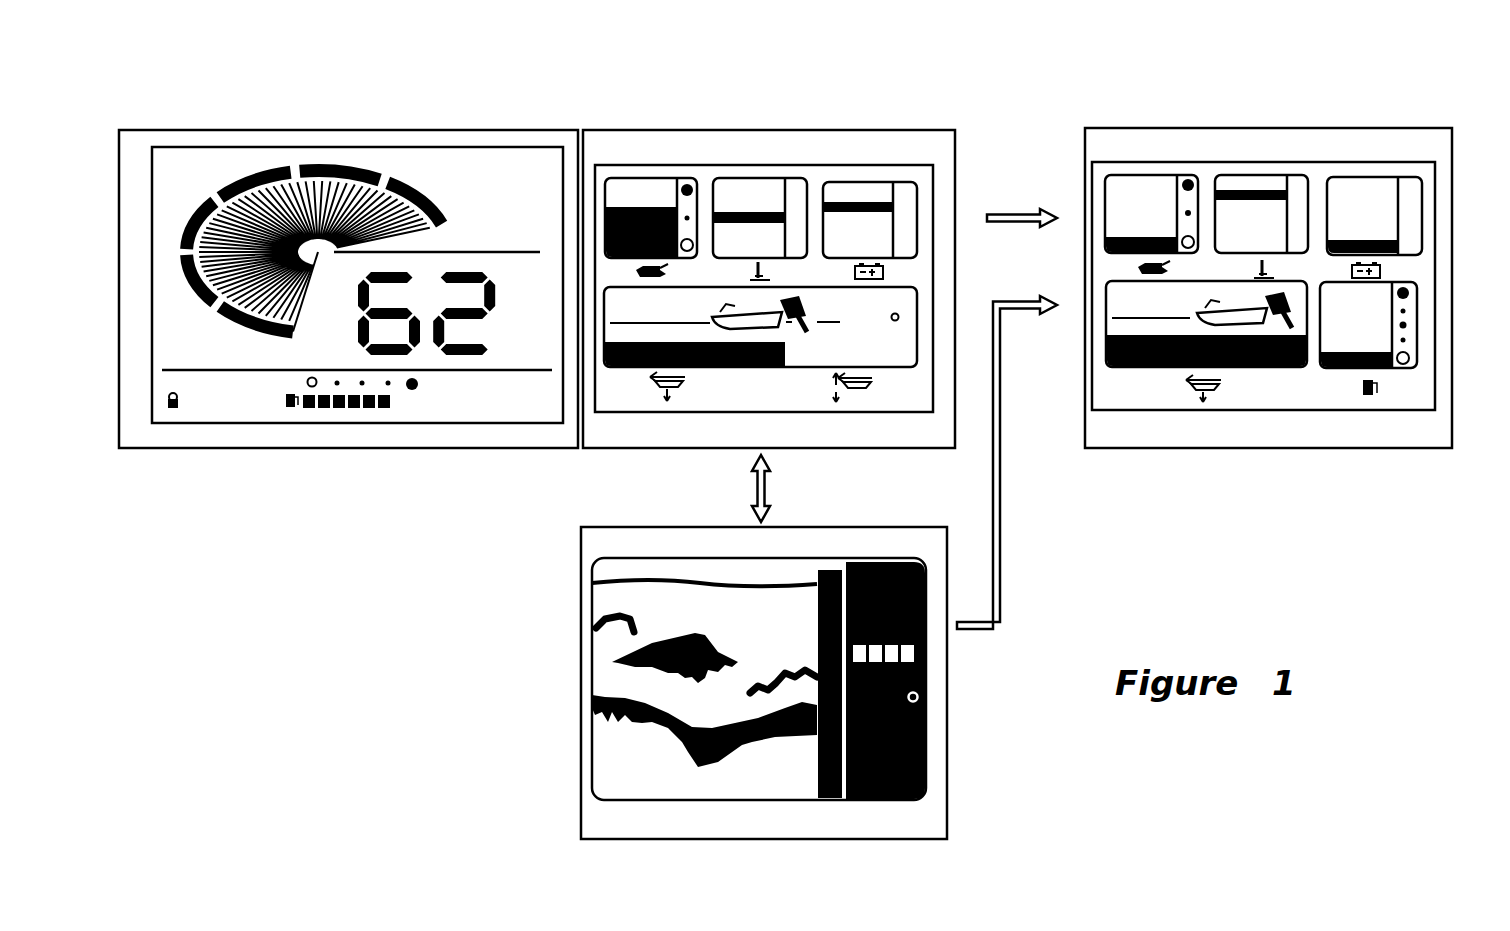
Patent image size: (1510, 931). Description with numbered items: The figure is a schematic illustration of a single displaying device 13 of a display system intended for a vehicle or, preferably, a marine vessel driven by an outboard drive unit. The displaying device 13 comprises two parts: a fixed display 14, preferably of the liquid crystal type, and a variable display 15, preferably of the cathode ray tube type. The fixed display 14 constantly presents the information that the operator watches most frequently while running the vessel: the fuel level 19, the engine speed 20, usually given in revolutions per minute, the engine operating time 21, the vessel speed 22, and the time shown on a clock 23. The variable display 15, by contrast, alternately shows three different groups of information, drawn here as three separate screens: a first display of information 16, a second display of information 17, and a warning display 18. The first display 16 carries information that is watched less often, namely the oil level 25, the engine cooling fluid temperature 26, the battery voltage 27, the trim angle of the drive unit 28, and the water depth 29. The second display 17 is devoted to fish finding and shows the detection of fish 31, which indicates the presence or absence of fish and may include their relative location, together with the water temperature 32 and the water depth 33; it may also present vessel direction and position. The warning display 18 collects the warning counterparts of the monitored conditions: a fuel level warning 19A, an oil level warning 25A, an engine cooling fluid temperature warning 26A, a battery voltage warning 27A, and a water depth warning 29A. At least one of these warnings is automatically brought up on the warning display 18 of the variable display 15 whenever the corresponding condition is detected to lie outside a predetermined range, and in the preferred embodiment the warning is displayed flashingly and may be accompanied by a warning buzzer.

The displaying device 13 is at (463, 130).
The fixed display 14 is at (351, 207).
The variable display 15 is at (695, 140).
The first display of information 16 is at (935, 200).
The second display of information 17 is at (728, 691).
The warning display 18 is at (1437, 213).
The fuel level 19 is at (406, 413).
The fuel level warning 19A is at (1340, 370).
The engine speed 20 is at (432, 179).
The engine operating time 21 is at (198, 418).
The vessel speed 22 is at (495, 281).
The clock 23 is at (514, 425).
The oil level 25 is at (650, 180).
The oil level warning 25A is at (1131, 175).
The engine cooling fluid temperature 26 is at (750, 178).
The engine cooling fluid temperature warning 26A is at (1258, 175).
The battery voltage 27 is at (850, 180).
The battery voltage warning 27A is at (1340, 177).
The trim angle of the drive unit 28 is at (857, 316).
The water depth 29 is at (698, 368).
The water depth warning 29A is at (1150, 368).
The detection of fish 31 is at (582, 600).
The water temperature 32 is at (930, 700).
The water depth 33 is at (930, 767).